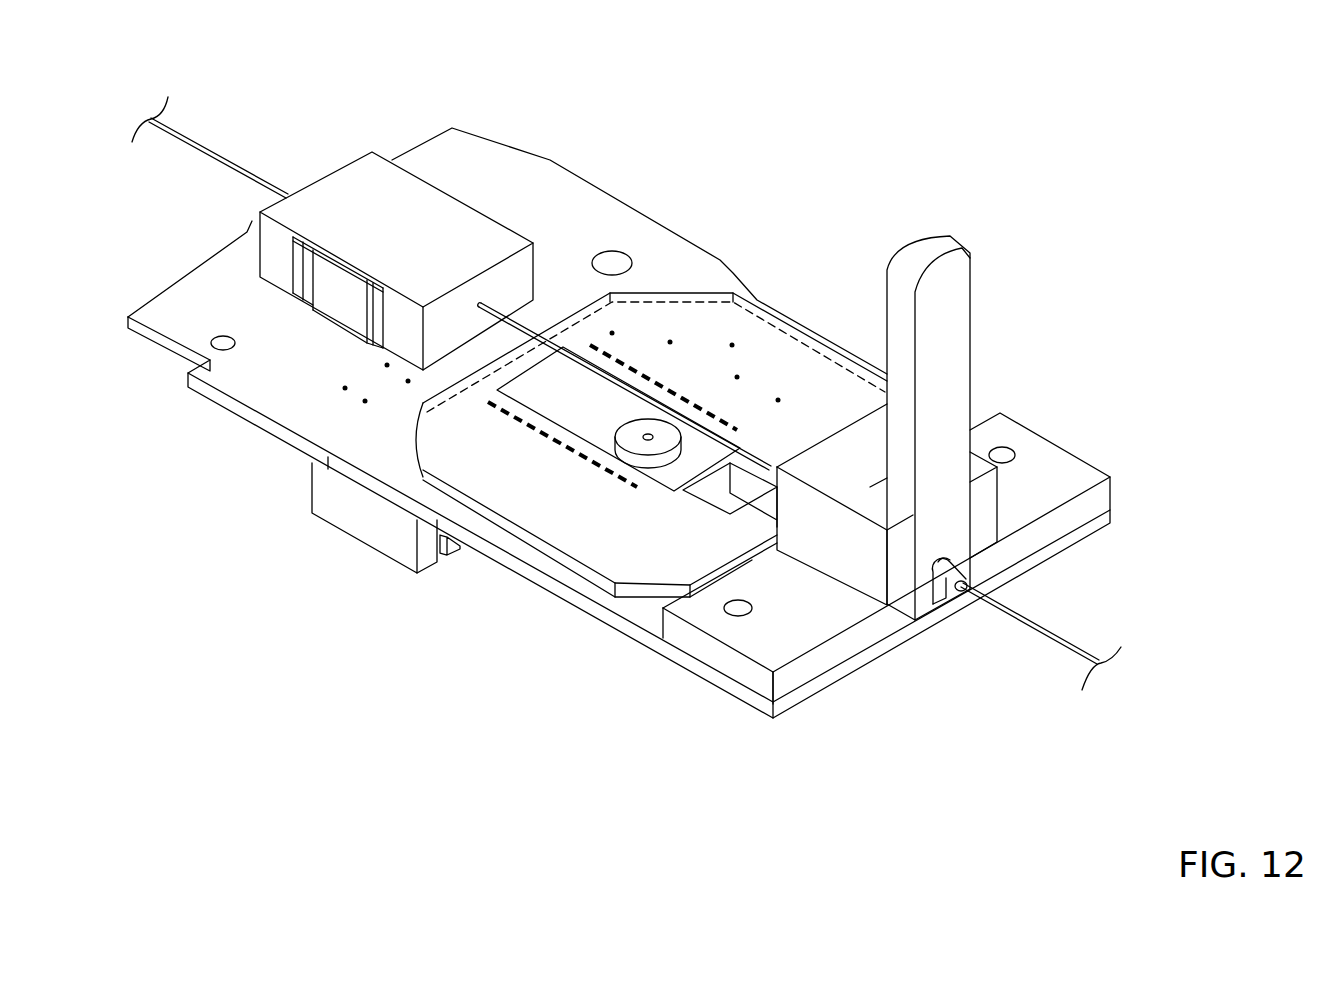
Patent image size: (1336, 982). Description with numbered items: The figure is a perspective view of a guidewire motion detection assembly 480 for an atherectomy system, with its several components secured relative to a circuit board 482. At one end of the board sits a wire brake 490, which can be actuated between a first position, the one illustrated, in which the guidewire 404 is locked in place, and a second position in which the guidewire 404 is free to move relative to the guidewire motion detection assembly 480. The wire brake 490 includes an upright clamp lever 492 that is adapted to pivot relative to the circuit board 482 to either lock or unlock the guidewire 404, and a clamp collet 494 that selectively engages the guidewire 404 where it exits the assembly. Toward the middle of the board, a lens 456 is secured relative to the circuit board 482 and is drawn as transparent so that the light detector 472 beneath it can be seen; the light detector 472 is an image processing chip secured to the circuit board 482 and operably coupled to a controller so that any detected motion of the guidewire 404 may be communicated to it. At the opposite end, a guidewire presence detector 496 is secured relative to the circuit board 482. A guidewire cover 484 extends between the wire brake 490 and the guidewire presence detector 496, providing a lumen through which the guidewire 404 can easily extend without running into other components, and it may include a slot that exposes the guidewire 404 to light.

The guidewire 404 is at (180, 140).
The lens 456 is at (536, 518).
The light detector 472 is at (683, 390).
The guidewire motion detection assembly 480 is at (938, 93).
The circuit board 482 is at (232, 390).
The guidewire cover 484 is at (545, 316).
The wire brake 490 is at (1012, 291).
The clamp lever 492 is at (955, 377).
The clamp collet 494 is at (950, 585).
The guidewire presence detector 496 is at (372, 168).